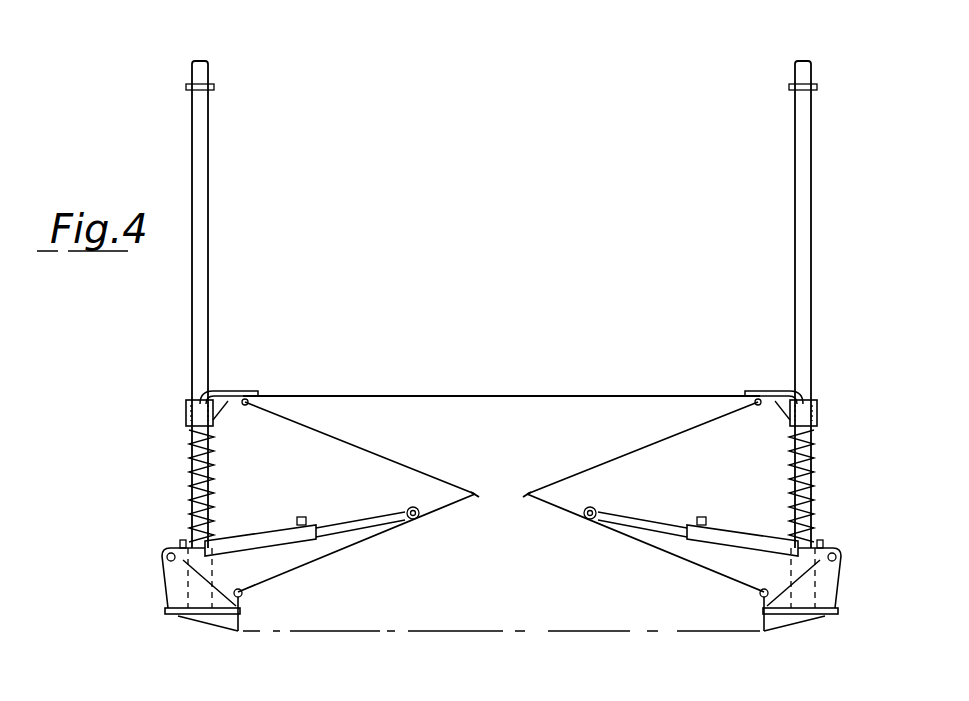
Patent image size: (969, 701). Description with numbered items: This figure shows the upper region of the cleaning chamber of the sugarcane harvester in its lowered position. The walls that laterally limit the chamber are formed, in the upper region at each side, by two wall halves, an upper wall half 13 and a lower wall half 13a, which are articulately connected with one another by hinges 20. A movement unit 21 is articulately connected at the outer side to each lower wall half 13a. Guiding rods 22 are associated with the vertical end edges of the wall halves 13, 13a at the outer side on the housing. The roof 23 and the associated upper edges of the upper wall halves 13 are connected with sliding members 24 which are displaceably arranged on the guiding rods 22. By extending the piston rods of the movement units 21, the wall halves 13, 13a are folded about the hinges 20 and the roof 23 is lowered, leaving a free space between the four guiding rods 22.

The upper wall half 13 is at (360, 440).
The lower wall half 13a is at (371, 540).
The hinge 20 is at (475, 497).
The movement unit 21 is at (270, 540).
The guiding rod 22 is at (200, 340).
The roof 23 is at (535, 396).
The sliding member 24 is at (192, 413).